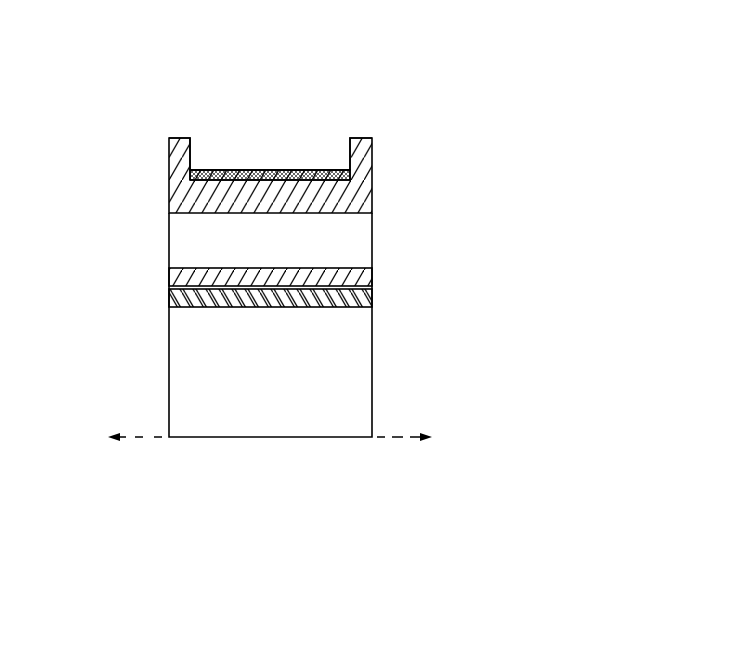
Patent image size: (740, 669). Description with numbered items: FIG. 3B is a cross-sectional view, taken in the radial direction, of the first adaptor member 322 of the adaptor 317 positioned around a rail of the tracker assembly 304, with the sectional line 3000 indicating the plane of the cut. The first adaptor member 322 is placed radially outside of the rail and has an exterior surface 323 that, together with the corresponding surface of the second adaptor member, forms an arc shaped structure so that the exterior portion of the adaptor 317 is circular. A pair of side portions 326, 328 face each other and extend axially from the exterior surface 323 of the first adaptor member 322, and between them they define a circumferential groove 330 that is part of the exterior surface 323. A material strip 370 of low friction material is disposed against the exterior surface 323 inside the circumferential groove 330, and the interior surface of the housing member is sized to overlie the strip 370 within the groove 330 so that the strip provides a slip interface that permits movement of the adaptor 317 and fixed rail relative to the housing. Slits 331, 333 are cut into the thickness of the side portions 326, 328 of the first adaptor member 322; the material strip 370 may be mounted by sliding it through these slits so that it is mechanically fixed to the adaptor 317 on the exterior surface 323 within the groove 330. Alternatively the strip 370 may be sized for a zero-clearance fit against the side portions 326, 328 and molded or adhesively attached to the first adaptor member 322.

The adaptor 317 is at (495, 72).
The first adaptor member 322 is at (503, 130).
The exterior surface 323 is at (196, 183).
The side portion 326 is at (169, 140).
The side portion 328 is at (364, 150).
The circumferential groove 330 is at (222, 181).
The slit 331 is at (187, 176).
The slit 333 is at (365, 176).
The tracker assembly 304 is at (347, 170).
The material strip 370 is at (213, 171).
The section line 3000 is at (142, 438).